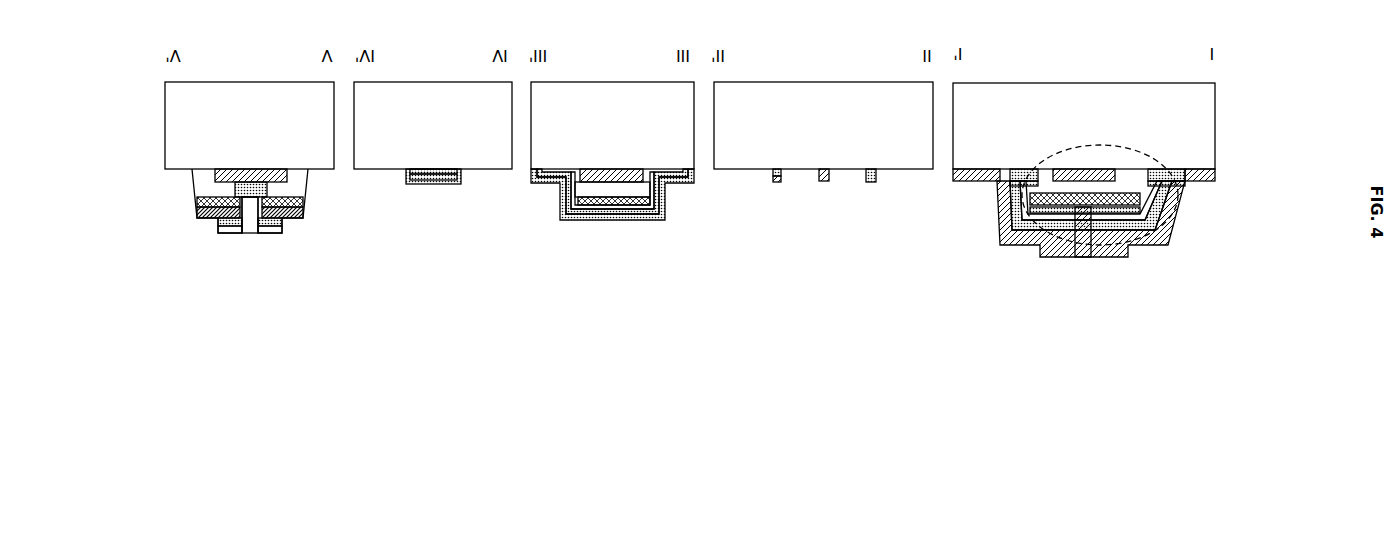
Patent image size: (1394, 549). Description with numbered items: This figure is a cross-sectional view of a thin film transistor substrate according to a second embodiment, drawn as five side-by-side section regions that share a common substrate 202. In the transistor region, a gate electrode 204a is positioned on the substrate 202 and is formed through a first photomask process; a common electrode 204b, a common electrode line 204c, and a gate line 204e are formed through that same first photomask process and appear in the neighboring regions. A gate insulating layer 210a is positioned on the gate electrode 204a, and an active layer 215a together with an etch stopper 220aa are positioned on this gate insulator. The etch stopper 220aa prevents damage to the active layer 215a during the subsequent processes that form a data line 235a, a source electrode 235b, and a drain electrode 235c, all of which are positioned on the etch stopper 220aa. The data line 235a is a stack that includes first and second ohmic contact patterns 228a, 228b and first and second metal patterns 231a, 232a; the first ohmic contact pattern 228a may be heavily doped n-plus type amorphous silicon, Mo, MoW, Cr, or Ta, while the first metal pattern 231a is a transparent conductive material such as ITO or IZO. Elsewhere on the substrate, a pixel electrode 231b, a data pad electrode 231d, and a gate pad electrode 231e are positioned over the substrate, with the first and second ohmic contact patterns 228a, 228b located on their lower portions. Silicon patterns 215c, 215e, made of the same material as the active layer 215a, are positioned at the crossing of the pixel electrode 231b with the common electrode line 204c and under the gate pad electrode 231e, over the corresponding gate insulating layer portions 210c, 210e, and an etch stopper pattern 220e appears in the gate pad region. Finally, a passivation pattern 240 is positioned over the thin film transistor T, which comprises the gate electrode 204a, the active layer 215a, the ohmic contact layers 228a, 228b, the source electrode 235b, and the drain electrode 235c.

The thin film transistor T is at (1045, 148).
The substrate 202 is at (187, 120).
The gate electrode 204a is at (1075, 169).
The common electrode 204b is at (822, 169).
The common electrode line 204c is at (626, 169).
The gate line 204e is at (245, 169).
The gate insulating layer 210a is at (1003, 215).
The gate insulating layer 210c is at (590, 192).
The gate insulating layer 210e is at (195, 180).
The active layer 215a is at (1128, 192).
The silicon pattern 215c is at (578, 196).
The silicon pattern 215e is at (200, 210).
The etch stopper 220aa is at (1082, 258).
The etch stopper 220e is at (300, 200).
The first ohmic contact pattern 228a is at (1008, 184).
The second ohmic contact pattern 228b is at (1016, 192).
The first metal pattern 231a is at (1003, 248).
The pixel electrode 231b is at (872, 182).
The data pad electrode 231d is at (445, 184).
The gate pad electrode 231e is at (242, 234).
The second metal pattern 232a is at (1045, 258).
The data line 235a is at (1255, 297).
The source electrode 235b is at (1196, 333).
The drain electrode 235c is at (1008, 333).
The passivation pattern 240 is at (1208, 181).